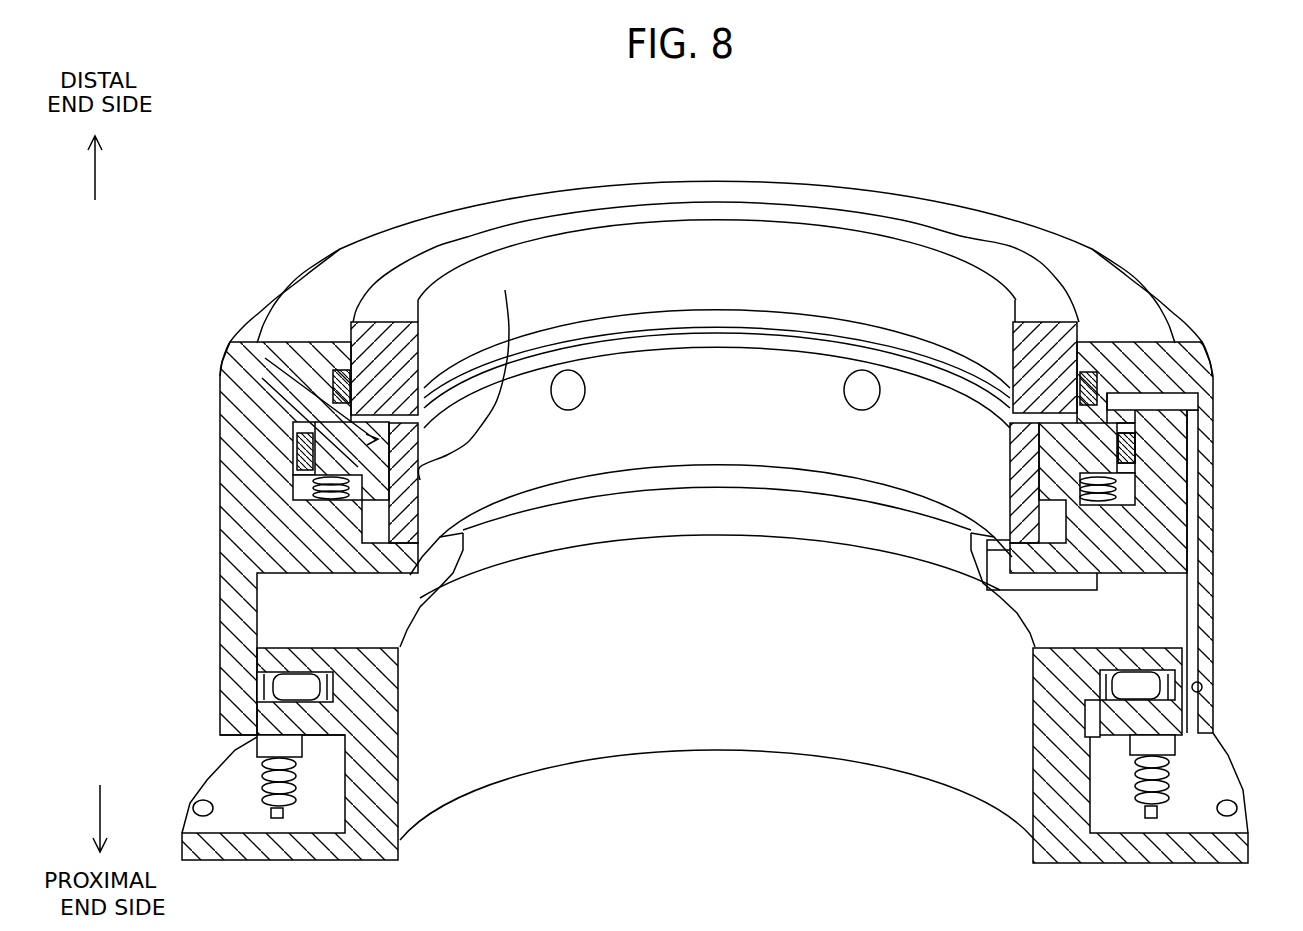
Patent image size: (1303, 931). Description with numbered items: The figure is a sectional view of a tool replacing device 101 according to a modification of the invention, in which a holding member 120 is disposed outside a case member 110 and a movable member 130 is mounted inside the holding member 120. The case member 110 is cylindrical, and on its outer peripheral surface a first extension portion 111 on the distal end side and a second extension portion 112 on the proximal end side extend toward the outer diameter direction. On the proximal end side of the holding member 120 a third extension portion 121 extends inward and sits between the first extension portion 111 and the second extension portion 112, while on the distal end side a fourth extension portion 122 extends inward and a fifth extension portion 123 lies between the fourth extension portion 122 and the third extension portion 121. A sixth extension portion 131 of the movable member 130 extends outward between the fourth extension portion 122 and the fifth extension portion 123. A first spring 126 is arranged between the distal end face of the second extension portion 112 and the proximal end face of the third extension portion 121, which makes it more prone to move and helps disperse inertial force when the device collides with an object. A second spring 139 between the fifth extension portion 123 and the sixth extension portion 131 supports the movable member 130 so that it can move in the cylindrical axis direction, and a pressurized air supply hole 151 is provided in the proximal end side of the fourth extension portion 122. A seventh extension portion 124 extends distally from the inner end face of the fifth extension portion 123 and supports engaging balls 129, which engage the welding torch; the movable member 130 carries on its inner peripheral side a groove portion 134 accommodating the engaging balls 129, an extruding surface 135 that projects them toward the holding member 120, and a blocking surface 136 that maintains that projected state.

The tool replacing device 101 is at (1011, 200).
The case member 110 is at (232, 785).
The first extension portion 111 is at (1133, 670).
The second extension portion 112 is at (1240, 843).
The holding member 120 is at (237, 398).
The third extension portion 121 is at (1117, 735).
The fourth extension portion 122 is at (1172, 347).
The fifth extension portion 123 is at (1090, 557).
The seventh extension portion 124 is at (1013, 462).
The first spring 126 is at (300, 812).
The engaging balls 129 is at (857, 398).
The movable member 130 is at (533, 285).
The sixth extension portion 131 is at (1097, 450).
The groove portion 134 is at (420, 453).
The extruding surface 135 is at (505, 290).
The blocking surface 136 is at (420, 598).
The second spring 139 is at (313, 507).
The pressurized air supply hole 151 is at (1205, 688).